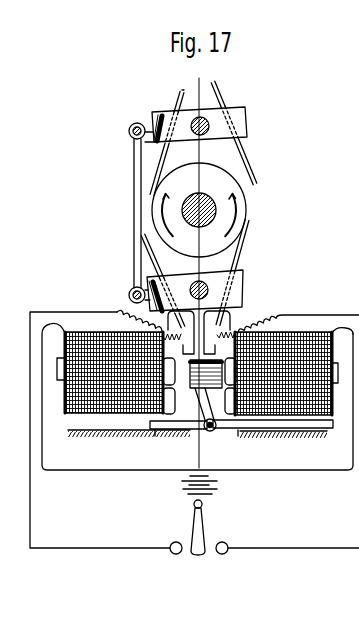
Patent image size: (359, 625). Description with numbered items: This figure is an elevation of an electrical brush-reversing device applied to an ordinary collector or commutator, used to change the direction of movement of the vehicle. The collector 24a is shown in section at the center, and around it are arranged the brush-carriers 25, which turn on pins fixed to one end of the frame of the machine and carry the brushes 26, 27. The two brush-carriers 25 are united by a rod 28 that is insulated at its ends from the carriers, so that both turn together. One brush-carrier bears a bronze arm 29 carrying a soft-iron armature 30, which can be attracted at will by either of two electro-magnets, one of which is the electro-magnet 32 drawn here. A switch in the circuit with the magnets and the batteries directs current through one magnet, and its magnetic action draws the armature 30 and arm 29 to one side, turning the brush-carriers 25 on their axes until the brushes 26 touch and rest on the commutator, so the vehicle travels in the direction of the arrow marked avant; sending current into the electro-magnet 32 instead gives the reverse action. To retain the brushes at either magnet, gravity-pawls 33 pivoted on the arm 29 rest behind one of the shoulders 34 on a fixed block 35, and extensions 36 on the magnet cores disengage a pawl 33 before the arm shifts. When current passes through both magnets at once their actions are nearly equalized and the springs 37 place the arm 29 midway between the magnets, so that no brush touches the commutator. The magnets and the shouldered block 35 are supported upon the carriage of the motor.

The collector 24a is at (199, 208).
The brush-carriers 25 is at (236, 108).
The brushes 26 is at (163, 162).
The brushes 27 is at (245, 159).
The rod 28 is at (133, 205).
The bronze arm 29 is at (199, 344).
The soft-iron armature 30 is at (191, 383).
The electro-magnet 32 is at (64, 388).
The gravity-pawls 33 is at (163, 425).
The shoulders 34 is at (155, 436).
The fixed block 35 is at (197, 444).
The extensions 36 is at (199, 386).
The springs 37 is at (241, 317).